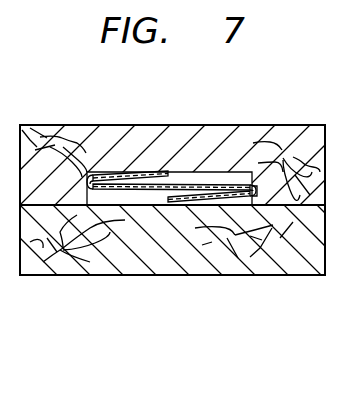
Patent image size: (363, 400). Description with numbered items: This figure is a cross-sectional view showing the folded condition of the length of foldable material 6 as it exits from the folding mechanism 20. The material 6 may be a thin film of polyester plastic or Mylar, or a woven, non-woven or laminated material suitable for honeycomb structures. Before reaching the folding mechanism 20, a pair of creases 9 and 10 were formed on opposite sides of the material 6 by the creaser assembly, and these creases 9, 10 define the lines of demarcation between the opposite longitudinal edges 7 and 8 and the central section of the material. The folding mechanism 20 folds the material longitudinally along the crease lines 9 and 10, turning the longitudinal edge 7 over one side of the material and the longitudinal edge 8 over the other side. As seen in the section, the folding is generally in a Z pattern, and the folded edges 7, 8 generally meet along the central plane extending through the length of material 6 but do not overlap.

The foldable material 6 is at (188, 186).
The longitudinal edge 7 is at (142, 177).
The longitudinal edge 8 is at (198, 198).
The crease 9 is at (73, 170).
The crease 10 is at (267, 208).
The folding mechanism 20 is at (283, 158).